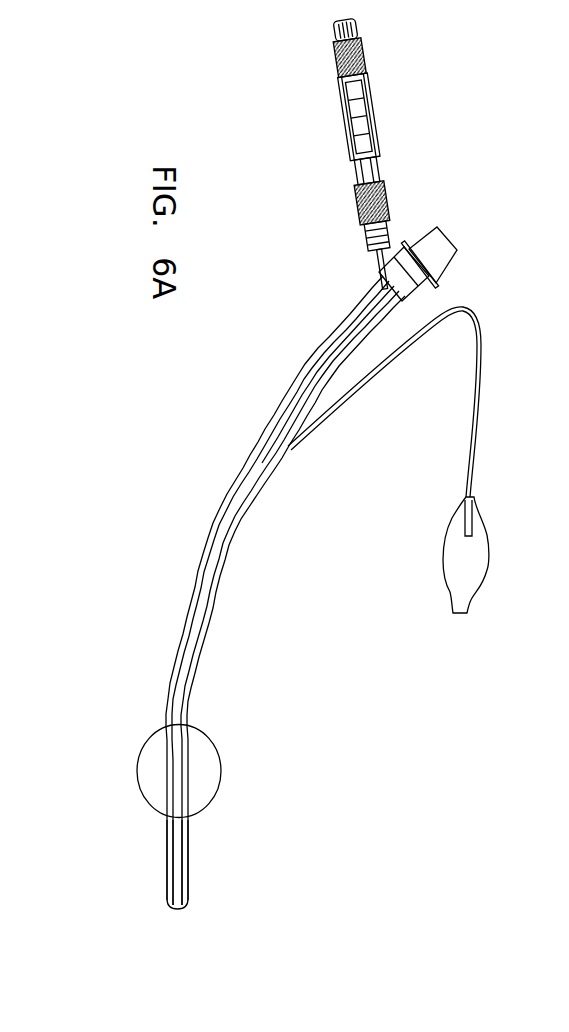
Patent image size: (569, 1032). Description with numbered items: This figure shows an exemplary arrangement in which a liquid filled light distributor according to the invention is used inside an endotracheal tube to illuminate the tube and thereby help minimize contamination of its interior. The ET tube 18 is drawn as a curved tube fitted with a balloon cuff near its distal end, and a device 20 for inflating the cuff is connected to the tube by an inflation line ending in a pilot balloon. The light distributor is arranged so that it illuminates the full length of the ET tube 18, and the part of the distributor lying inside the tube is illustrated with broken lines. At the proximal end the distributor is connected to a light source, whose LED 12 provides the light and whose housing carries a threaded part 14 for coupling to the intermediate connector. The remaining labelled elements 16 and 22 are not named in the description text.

The LED 12 is at (376, 292).
The threaded part 14 is at (186, 882).
The stylet 16 is at (336, 333).
The ET tube 18 is at (348, 162).
The device for inflating the cuff 20 is at (220, 758).
The pilot balloon 22 is at (489, 548).